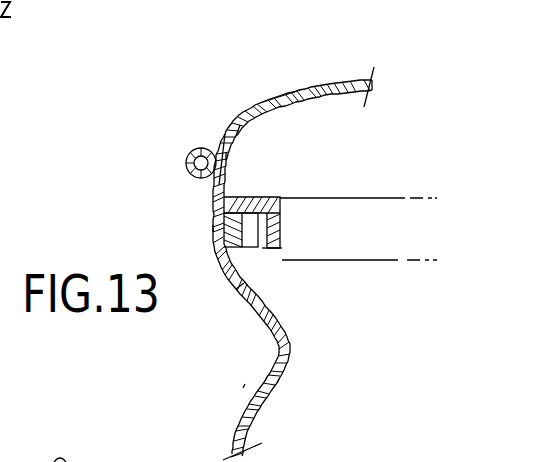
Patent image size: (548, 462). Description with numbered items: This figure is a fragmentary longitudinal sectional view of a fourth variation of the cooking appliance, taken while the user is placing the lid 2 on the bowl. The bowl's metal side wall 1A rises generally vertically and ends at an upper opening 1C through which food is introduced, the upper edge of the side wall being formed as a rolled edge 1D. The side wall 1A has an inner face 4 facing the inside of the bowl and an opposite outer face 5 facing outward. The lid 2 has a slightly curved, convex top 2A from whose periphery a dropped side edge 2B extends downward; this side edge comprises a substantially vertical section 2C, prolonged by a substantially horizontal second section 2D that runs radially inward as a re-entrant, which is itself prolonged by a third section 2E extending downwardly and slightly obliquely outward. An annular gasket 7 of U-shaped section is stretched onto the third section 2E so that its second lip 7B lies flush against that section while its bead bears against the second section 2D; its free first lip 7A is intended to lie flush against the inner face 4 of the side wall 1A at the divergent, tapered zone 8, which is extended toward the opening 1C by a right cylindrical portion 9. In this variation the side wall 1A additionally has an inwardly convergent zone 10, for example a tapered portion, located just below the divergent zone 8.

The side wall 1A is at (233, 427).
The upper opening 1C is at (213, 134).
The rolled edge 1D is at (188, 157).
The lid 2 is at (339, 83).
The top 2A is at (310, 81).
The dropped side edge 2B is at (249, 138).
The substantially vertical section 2C is at (231, 157).
The substantially horizontal section 2D is at (254, 197).
The third section 2E is at (277, 237).
The annular gasket 7 is at (212, 198).
The first lip 7A is at (207, 228).
The second lip 7B is at (263, 249).
The right cylindrical portion 9 is at (210, 210).
The divergent zone 8 is at (242, 290).
The convergent zone 10 is at (265, 383).
The inner face 4 is at (273, 396).
The outer face 5 is at (246, 382).